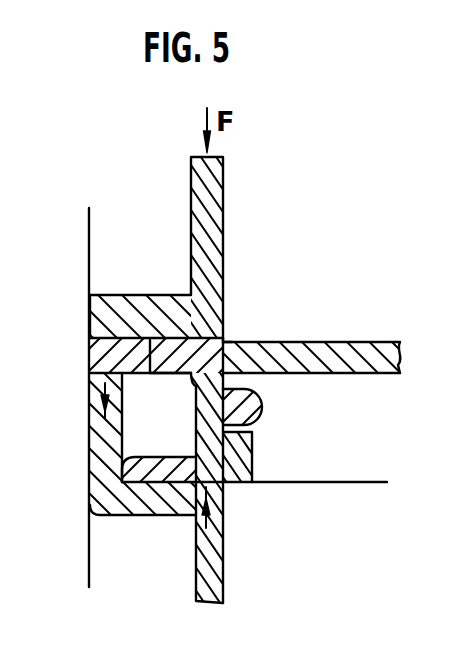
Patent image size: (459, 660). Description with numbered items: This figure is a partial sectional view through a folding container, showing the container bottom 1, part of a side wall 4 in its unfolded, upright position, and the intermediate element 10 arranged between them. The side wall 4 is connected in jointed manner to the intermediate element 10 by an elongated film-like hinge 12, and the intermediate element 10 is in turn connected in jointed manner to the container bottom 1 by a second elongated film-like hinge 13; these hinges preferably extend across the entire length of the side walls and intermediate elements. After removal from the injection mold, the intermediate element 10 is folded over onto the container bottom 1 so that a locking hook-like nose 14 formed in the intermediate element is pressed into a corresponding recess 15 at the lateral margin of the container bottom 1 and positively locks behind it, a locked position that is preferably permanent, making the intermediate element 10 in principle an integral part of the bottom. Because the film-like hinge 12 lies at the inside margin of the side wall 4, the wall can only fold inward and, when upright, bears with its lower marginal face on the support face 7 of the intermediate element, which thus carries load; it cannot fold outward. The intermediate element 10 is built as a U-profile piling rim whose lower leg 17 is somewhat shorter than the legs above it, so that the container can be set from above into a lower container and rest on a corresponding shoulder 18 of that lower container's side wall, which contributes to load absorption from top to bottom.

The container bottom 1 is at (327, 345).
The side wall 4 is at (217, 233).
The support face 7 is at (151, 355).
The intermediate element 10 is at (88, 352).
The film-like hinge 12 is at (223, 342).
The film-like hinge 13 is at (223, 483).
The locking hook-like nose 14 is at (262, 404).
The recess 15 is at (245, 431).
The lower leg 17 is at (128, 515).
The shoulder 18 is at (167, 515).